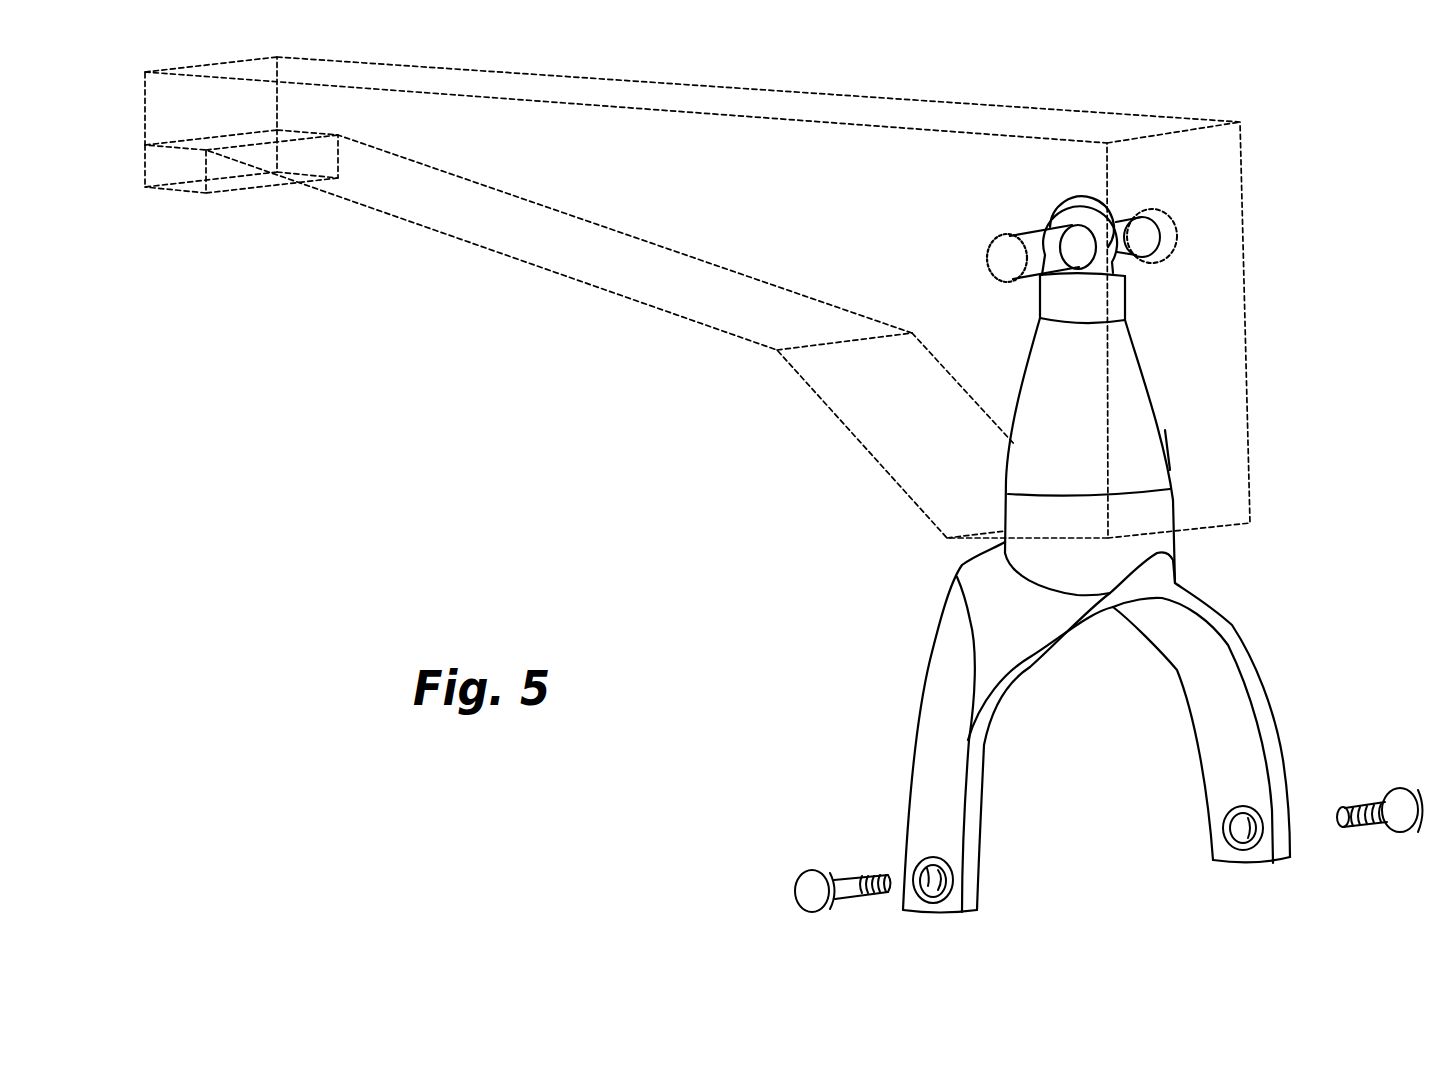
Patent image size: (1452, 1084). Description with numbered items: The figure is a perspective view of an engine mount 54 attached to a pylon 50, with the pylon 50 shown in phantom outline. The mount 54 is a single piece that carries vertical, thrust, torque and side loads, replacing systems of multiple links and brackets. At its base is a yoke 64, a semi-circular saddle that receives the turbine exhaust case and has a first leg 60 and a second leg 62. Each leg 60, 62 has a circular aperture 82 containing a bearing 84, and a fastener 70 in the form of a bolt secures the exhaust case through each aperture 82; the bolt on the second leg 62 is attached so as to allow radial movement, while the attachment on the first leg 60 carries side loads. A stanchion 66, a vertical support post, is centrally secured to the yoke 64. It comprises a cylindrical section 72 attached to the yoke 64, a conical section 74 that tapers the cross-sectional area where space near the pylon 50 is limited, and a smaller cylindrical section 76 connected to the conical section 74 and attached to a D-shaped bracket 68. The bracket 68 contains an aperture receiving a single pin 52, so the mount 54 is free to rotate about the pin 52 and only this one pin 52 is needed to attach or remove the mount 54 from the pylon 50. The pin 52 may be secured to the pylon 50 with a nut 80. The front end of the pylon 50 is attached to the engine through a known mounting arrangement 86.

The pylon 50 is at (766, 88).
The pin 52 is at (1043, 229).
The mount 54 is at (1162, 433).
The first leg 60 is at (912, 740).
The second leg 62 is at (1262, 657).
The yoke 64 is at (955, 580).
The stanchion 66 is at (1030, 364).
The bracket 68 is at (1094, 206).
The fastener 70 is at (848, 897).
The cylindrical section 72 is at (1177, 547).
The conical section 74 is at (1138, 354).
The smaller cylindrical section 76 is at (1127, 293).
The nut 80 is at (1163, 214).
The aperture 82 is at (927, 868).
The bearing 84 is at (1243, 852).
The mounting arrangement 86 is at (256, 193).